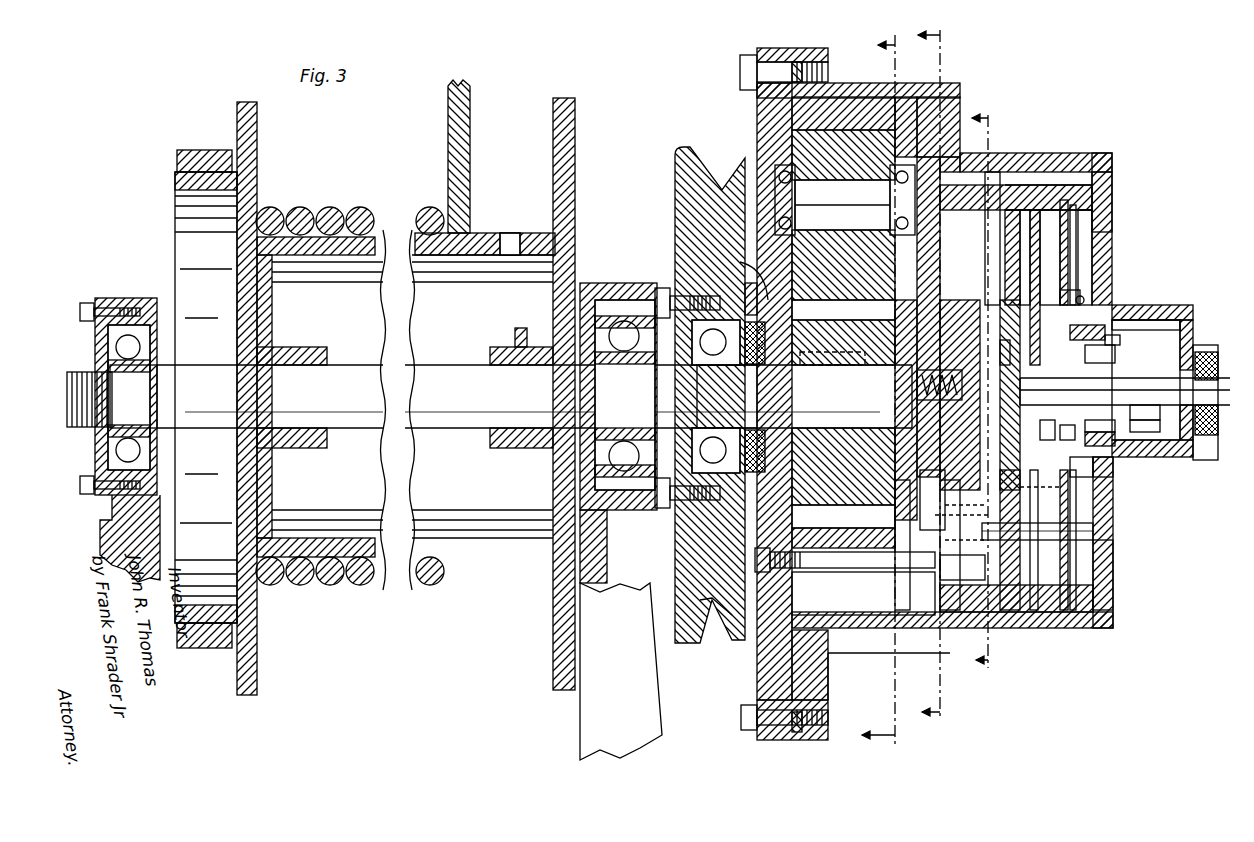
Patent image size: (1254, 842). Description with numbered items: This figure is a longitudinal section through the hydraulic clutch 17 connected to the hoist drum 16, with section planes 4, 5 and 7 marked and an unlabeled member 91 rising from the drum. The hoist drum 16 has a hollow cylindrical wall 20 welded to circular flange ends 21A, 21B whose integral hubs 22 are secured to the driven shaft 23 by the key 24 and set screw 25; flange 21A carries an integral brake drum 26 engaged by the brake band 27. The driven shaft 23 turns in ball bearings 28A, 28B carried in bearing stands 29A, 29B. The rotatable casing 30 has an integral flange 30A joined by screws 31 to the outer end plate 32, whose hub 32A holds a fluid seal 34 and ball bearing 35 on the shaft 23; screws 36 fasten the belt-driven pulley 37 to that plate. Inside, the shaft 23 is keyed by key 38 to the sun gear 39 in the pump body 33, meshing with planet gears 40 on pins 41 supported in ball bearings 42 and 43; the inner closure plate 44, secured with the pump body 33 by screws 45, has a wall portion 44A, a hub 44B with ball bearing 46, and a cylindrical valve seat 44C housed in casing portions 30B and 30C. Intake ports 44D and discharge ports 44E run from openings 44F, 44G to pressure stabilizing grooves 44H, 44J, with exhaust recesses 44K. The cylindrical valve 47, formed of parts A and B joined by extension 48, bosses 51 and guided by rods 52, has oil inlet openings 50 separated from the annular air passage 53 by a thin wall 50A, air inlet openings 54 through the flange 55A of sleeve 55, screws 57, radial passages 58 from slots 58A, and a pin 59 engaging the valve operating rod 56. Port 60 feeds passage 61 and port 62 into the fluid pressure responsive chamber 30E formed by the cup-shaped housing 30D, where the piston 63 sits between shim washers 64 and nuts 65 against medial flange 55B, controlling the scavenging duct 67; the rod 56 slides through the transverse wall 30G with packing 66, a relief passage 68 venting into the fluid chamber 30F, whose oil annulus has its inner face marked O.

The section line 4- 4 is at (872, 390).
The section line 5- 5 is at (943, 378).
The section line 7- 7 is at (991, 398).
The hoist drum 16 is at (236, 112).
The hydraulic clutch 17 is at (740, 60).
The hollow cylindrical wall 20 is at (478, 246).
The circular flange end 21A is at (257, 137).
The circular flange end 21B is at (575, 128).
The integral hub 22 is at (405, 393).
The driven shaft 23 is at (378, 388).
The key 24 is at (490, 434).
The set screw 25 is at (515, 334).
The brake drum 26 is at (176, 205).
The brake band 27 is at (177, 160).
The ball bearing 28A is at (125, 348).
The ball bearing 28B is at (625, 300).
The bearing stand 29A is at (112, 515).
The bearing stand 29B is at (580, 714).
The rotatable casing 30 is at (899, 417).
The circular integral flange 30A is at (802, 740).
The casing wall portion 30B is at (1072, 165).
The casing wall portion 30C is at (1100, 236).
The cup-shaped housing 30D is at (1150, 457).
The fluid pressure responsive chamber 30E is at (1113, 480).
The fluid chamber 30F is at (1113, 547).
The transverse wall 30G is at (1170, 318).
The screws 31 is at (741, 715).
The outer end plate 32 is at (762, 78).
The hub 32A is at (752, 290).
The pump body 33 is at (845, 100).
The fluid seal 34 is at (743, 271).
The ball bearing 35 is at (722, 360).
The screws 36 is at (665, 290).
The pulley 37 is at (690, 190).
The key 38 is at (833, 366).
The sun gear 39 is at (775, 488).
The planet gears 40 is at (800, 165).
The supporting pins 41 is at (830, 180).
The ball bearing 42 is at (800, 192).
The ball bearing 43 is at (965, 160).
The inner closure plate 44 is at (925, 118).
The wall portion 44A is at (935, 110).
The hub portion 44B is at (948, 317).
The cylindrical valve seat 44C is at (1062, 192).
The intake ports 44D is at (912, 578).
The discharge ports 44E is at (1008, 205).
The intake opening 44F is at (843, 517).
The discharge opening 44G is at (843, 289).
The pressure stabilizing groove 44H is at (1010, 610).
The pressure stabilizing groove 44J is at (1080, 226).
The recesses 44K is at (1072, 208).
The screws 45 is at (870, 556).
The ball bearing 46 is at (932, 500).
The cylindrical valve 47 is at (1040, 556).
The cylindrical extension 48 is at (975, 385).
The oil inlet openings 50 is at (962, 559).
The thin wall 50A is at (985, 195).
The bosses 51 is at (965, 513).
The rods 52 is at (965, 530).
The annular air passage 53 is at (1013, 258).
The air inlet openings 54 is at (1076, 437).
The sleeve 55 is at (1116, 352).
The flange 55A is at (1070, 292).
The medial flange 55B is at (1100, 332).
The valve operating rod 56 is at (1195, 365).
The screws 57 is at (1050, 332).
The pressure communicating passages 58 is at (1048, 272).
The axially disposed slots 58A is at (1028, 172).
The pin 59 is at (1054, 431).
The port 60 is at (1012, 350).
The pressure communicating passage 61 is at (1150, 417).
The port 62 is at (1149, 432).
The piston 63 is at (1100, 442).
The shim washers 64 is at (1100, 428).
The nuts 65 is at (1120, 340).
The packing 66 is at (1200, 450).
The scavenging duct 67 is at (1095, 470).
The fluid relief passage 68 is at (1145, 320).
The bar 91 is at (448, 128).
The valve part A is at (956, 514).
The valve part B is at (1046, 491).
The inner face of oil annulus O is at (1085, 300).